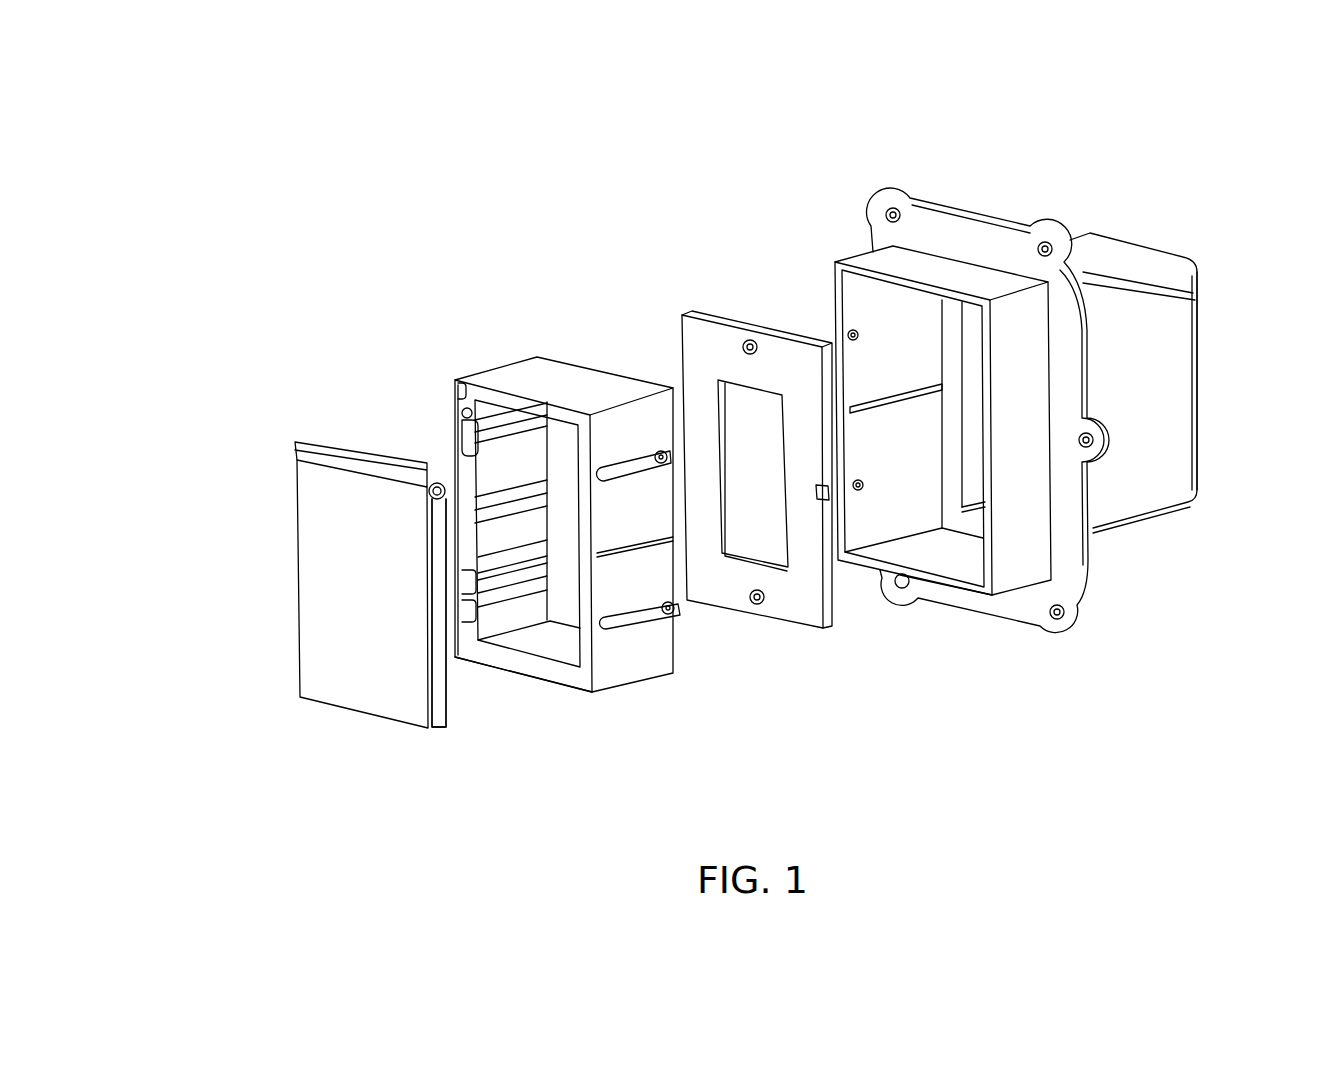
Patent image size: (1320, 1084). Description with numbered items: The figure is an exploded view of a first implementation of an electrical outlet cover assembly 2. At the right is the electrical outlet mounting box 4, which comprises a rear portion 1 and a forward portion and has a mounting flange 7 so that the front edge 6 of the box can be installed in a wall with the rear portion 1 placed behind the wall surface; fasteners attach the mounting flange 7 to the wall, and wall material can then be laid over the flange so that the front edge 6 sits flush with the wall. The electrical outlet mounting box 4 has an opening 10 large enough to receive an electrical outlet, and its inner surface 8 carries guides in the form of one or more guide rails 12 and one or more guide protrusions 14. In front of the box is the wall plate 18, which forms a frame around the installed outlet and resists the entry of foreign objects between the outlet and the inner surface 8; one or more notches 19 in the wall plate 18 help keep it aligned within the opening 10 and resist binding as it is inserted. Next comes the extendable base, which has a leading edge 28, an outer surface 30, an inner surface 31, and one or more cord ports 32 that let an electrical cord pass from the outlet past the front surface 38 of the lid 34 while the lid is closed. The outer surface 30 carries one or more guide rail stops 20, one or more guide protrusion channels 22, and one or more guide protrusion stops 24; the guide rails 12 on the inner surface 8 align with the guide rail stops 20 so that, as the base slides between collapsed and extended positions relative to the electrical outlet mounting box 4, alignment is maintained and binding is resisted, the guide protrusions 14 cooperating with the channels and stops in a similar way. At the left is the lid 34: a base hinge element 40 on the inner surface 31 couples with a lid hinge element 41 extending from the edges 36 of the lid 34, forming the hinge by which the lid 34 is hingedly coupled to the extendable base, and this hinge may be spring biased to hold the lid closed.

The rear portion 1 is at (1133, 260).
The electrical outlet cover assembly 2 is at (415, 220).
The electrical outlet mounting box 4 is at (1168, 468).
The front edge 6 is at (957, 582).
The mounting flange 7 is at (962, 232).
The inner surface 8 is at (950, 557).
The opening 10 is at (972, 392).
The guide rail 12 is at (895, 397).
The guide protrusion 14 is at (849, 331).
The wall plate 18 is at (703, 343).
The notch 19 is at (822, 498).
The guide rail stop 20 is at (633, 543).
The guide protrusion channel 22 is at (606, 468).
The guide protrusion stop 24 is at (660, 456).
The leading edge 28 is at (453, 383).
The outer surface 30 is at (520, 383).
The inner surface 31 is at (557, 642).
The cord port 32 is at (528, 660).
The lid 34 is at (272, 760).
The edges 36 is at (433, 693).
The front surface 38 is at (338, 557).
The base hinge element 40 is at (462, 410).
The lid hinge element 41 is at (443, 727).